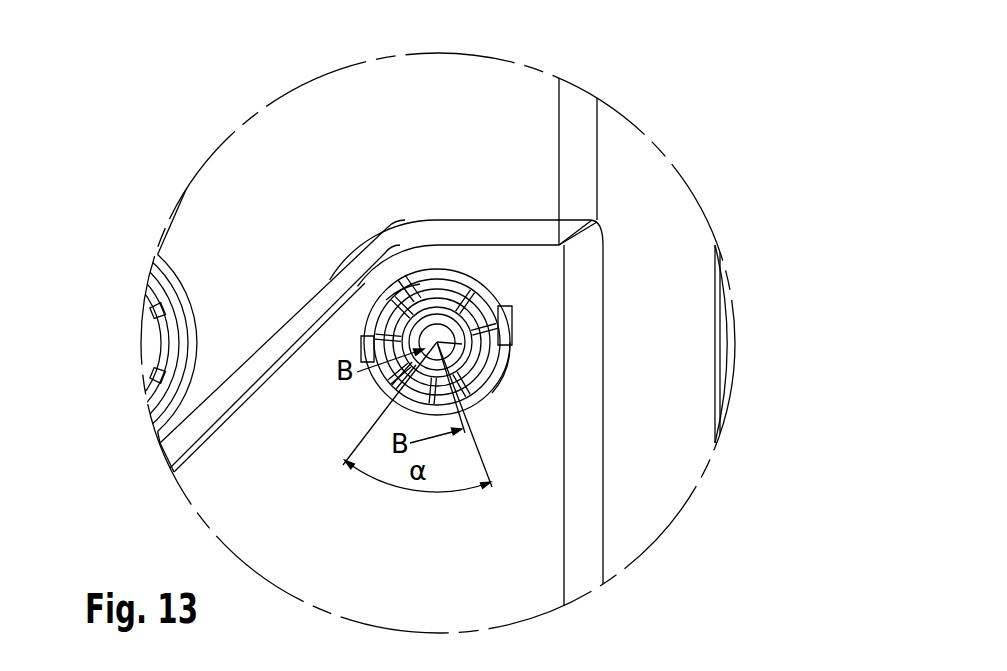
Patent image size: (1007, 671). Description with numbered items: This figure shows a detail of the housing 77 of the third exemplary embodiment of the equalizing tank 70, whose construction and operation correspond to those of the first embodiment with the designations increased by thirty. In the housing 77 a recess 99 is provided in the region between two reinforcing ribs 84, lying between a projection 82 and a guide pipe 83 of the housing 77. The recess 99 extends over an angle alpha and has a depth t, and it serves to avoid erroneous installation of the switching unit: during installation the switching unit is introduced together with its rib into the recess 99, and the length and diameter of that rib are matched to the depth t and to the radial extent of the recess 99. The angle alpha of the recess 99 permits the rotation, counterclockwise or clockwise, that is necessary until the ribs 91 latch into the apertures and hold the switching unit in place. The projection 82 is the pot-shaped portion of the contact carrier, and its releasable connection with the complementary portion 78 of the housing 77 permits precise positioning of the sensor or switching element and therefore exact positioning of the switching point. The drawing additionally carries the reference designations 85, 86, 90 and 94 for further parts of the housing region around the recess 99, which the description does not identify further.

The equalizing tank 70 is at (670, 100).
The housing 77 is at (522, 112).
The complementary portion 78 is at (497, 400).
The projection 82 is at (502, 366).
The guide pipe 83 is at (398, 308).
The reinforcing ribs 84 is at (428, 305).
The housing rib 85 is at (538, 438).
The housing flange 86 is at (225, 195).
The retaining tongue 90 is at (369, 325).
The retaining tab 91 is at (508, 326).
The central bore 94 is at (440, 335).
The recess 99 is at (392, 402).